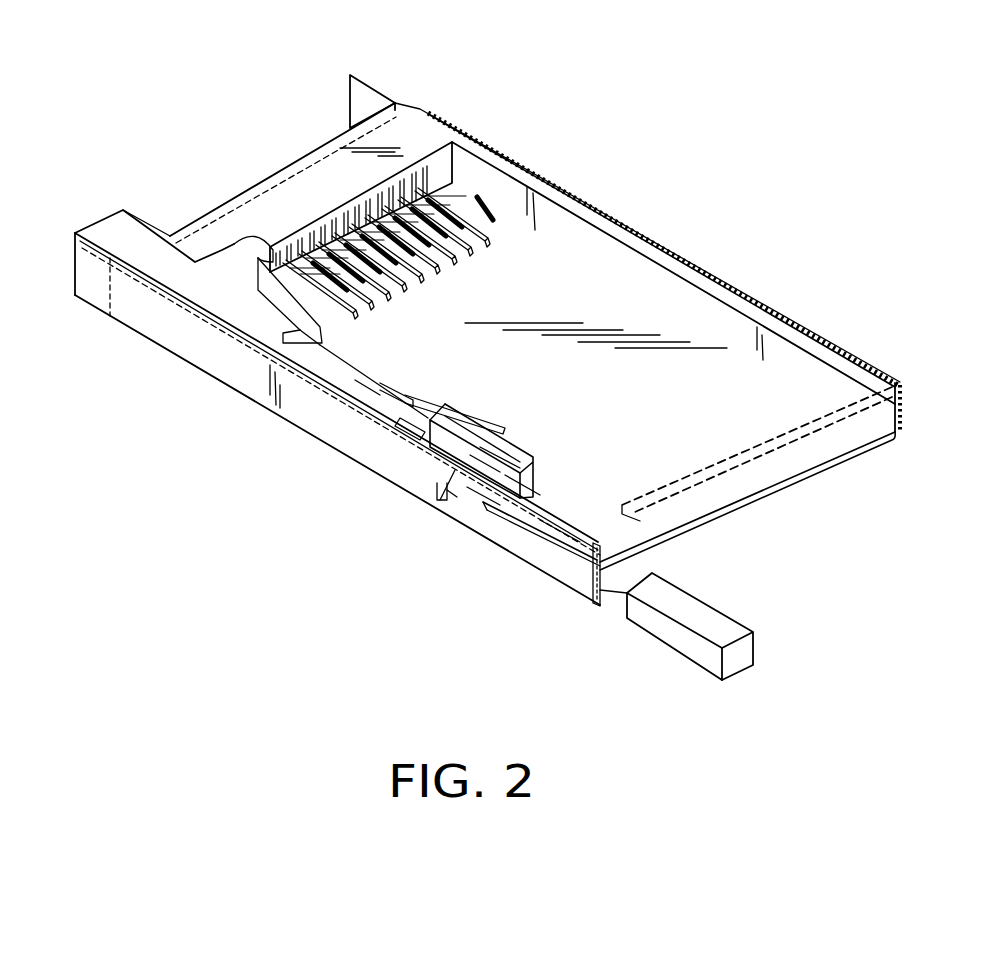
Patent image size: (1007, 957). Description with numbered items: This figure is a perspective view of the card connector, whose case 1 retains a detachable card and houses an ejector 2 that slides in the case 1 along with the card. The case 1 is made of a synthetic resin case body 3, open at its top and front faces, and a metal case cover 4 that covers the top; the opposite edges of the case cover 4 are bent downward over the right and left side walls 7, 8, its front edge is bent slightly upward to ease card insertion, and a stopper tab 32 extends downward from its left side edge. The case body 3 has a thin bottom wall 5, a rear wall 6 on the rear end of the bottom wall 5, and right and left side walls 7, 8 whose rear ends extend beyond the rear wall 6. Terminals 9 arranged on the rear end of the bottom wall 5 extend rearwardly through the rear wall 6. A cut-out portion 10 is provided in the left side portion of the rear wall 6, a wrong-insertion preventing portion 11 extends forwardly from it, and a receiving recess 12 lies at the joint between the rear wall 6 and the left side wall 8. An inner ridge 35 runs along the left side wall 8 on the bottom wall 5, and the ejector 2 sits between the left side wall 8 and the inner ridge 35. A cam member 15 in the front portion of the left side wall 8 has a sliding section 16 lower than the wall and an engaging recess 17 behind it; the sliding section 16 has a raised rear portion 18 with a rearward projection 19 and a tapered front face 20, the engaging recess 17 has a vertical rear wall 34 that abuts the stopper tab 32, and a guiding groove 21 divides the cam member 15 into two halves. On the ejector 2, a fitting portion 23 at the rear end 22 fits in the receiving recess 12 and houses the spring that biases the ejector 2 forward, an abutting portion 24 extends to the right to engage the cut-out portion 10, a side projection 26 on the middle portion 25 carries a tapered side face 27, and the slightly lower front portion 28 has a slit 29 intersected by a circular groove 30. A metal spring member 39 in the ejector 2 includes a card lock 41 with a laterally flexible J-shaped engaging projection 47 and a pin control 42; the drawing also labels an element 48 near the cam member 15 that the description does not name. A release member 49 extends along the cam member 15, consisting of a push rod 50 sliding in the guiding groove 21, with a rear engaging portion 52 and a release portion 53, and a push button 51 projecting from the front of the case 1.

The case 1 is at (800, 318).
The ejector 2 is at (148, 230).
The case body 3 is at (140, 338).
The case cover 4 is at (620, 213).
The bottom wall 5 is at (683, 350).
The rear wall 6 is at (414, 116).
The right side wall 7 is at (673, 263).
The left side wall 8 is at (237, 378).
The terminals 9 is at (495, 223).
The cut-out portion 10 is at (227, 252).
The wrong-insertion preventing portion 11 is at (308, 327).
The receiving recess 12 is at (128, 253).
The cam member 15 is at (630, 508).
The sliding section 16 is at (527, 543).
The engaging recess 17 is at (493, 447).
The raised rear portion 18 is at (540, 463).
The rearward projection 19 is at (458, 497).
The tapered front face 20 is at (500, 503).
The guiding groove 21 is at (553, 533).
The rear end 22 is at (121, 243).
The fitting portion 23 is at (117, 253).
The abutting portion 24 is at (257, 247).
The middle portion 25 is at (245, 330).
The side projection 26 is at (327, 348).
The tapered side face 27 is at (373, 383).
The front portion 28 is at (460, 412).
The slit 29 is at (495, 430).
The circular groove 30 is at (462, 420).
The stopper tab 32 is at (437, 483).
The vertical rear wall 34 is at (457, 497).
The inner ridge 35 is at (565, 527).
The spring member 39 is at (452, 405).
The card lock 41 is at (435, 406).
The pin control 42 is at (410, 432).
The J-shaped engaging projection 47 is at (333, 340).
The slide rail upper edge 48 is at (488, 503).
The release member 49 is at (655, 639).
The push rod 50 is at (615, 600).
The push button 51 is at (687, 655).
The rear engaging portion 52 is at (495, 440).
The release portion 53 is at (480, 483).